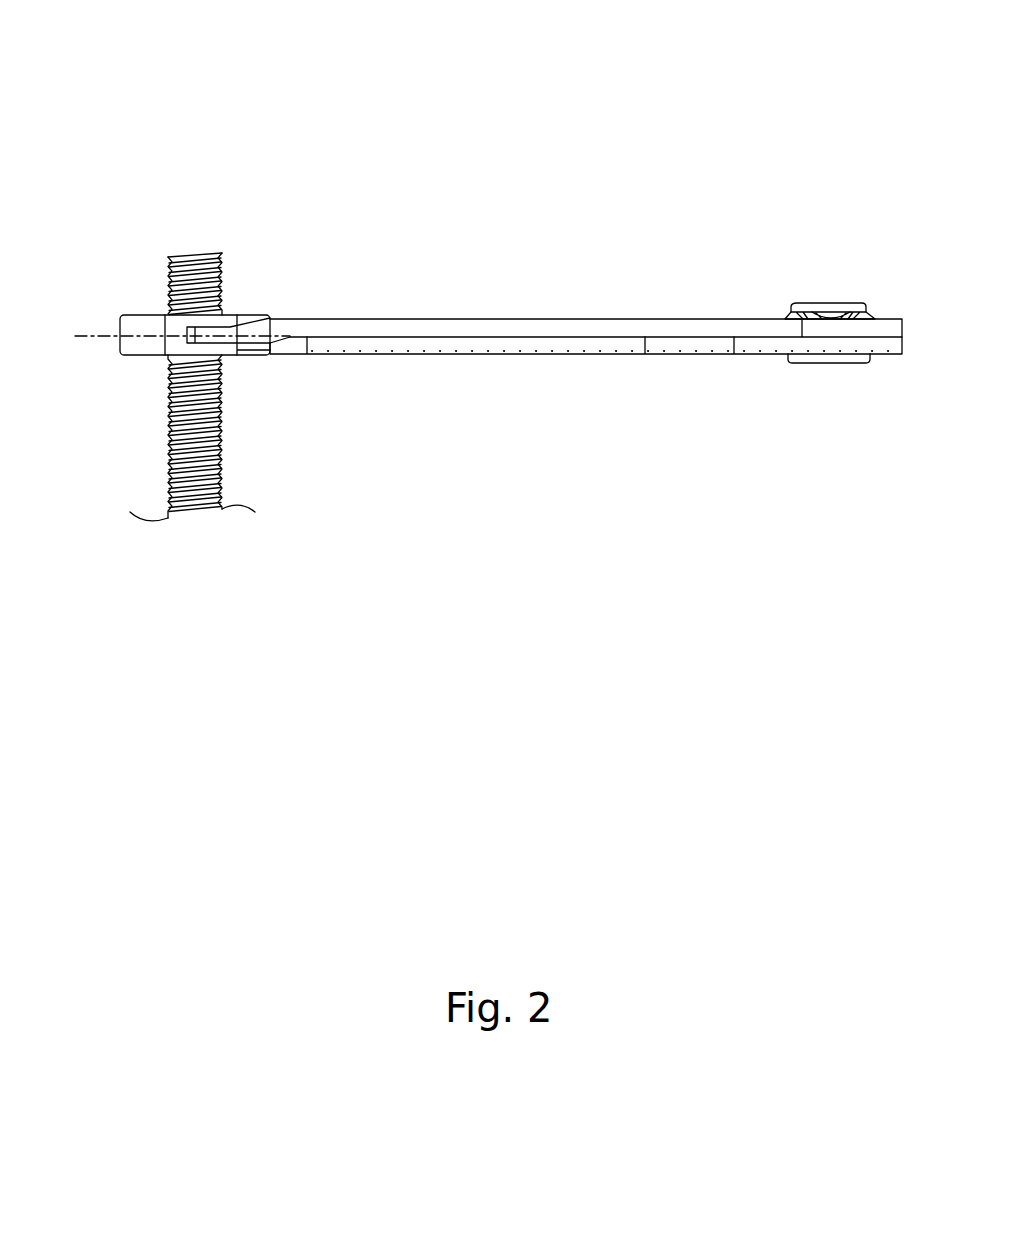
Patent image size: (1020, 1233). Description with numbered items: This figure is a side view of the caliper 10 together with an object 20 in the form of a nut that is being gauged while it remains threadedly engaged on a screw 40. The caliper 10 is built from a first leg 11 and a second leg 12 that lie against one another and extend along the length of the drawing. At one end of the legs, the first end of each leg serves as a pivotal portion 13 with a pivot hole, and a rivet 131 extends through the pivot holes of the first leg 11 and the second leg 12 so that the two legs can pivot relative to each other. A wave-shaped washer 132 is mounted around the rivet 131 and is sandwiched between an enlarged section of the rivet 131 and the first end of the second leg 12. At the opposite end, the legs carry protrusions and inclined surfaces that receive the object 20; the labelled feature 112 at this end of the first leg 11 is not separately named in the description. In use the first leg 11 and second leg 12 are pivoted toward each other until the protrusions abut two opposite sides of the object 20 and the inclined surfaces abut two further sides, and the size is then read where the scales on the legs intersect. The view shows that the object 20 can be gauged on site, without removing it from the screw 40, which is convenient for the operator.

The caliper 10 is at (462, 195).
The first leg 11 is at (482, 330).
The second leg 12 is at (578, 343).
The pivotal portion 13 is at (829, 372).
The rivet 131 is at (828, 308).
The wave-shaped washer 132 is at (790, 317).
The object 20 is at (160, 316).
The slot of clamping head 112 is at (273, 330).
The screw 40 is at (217, 470).